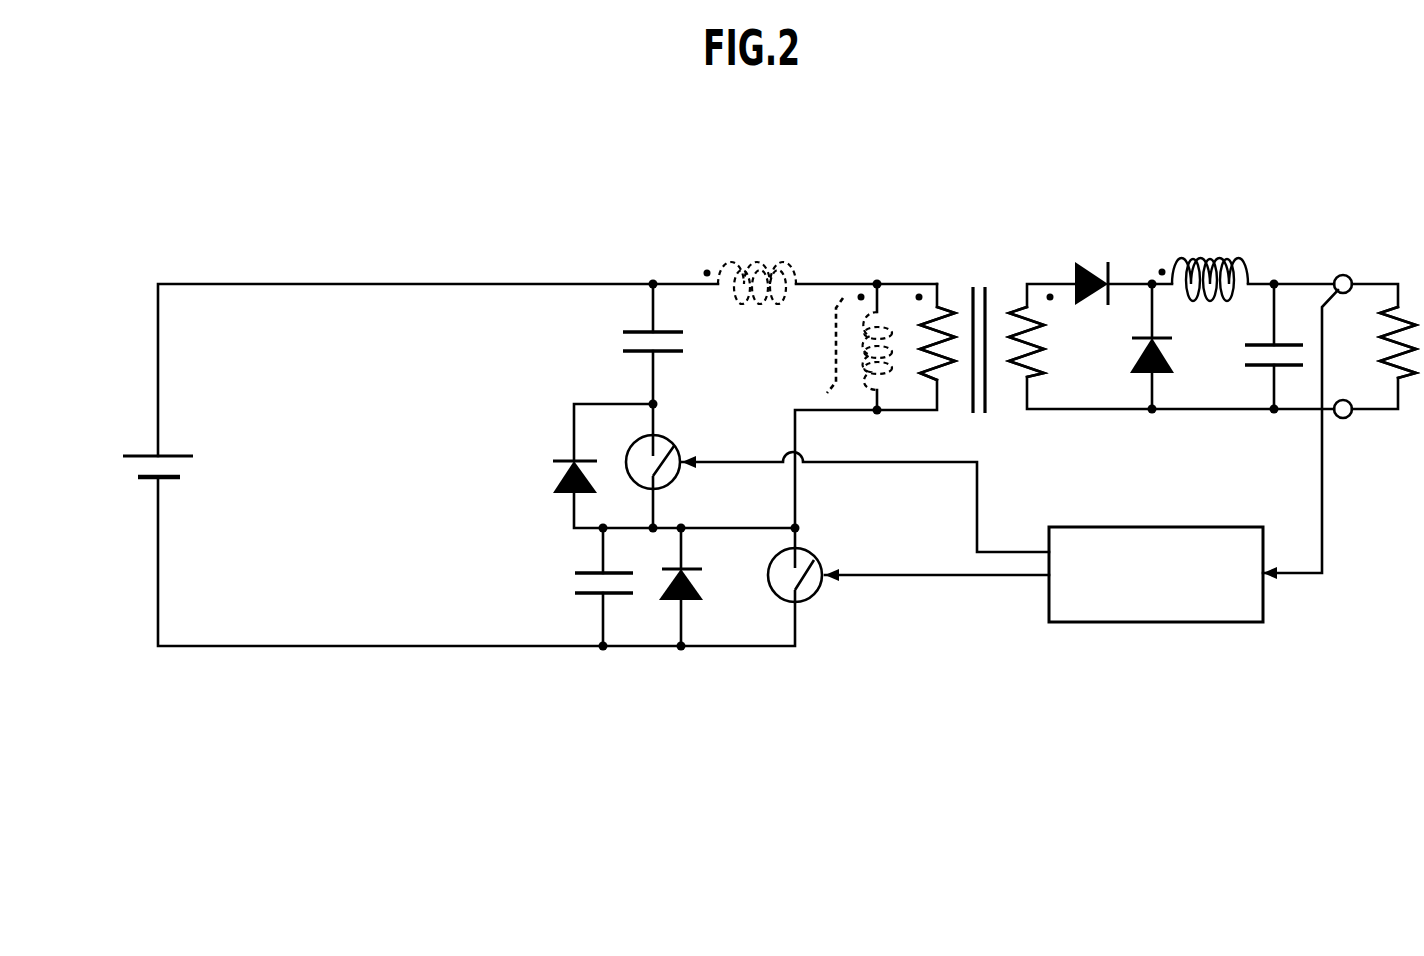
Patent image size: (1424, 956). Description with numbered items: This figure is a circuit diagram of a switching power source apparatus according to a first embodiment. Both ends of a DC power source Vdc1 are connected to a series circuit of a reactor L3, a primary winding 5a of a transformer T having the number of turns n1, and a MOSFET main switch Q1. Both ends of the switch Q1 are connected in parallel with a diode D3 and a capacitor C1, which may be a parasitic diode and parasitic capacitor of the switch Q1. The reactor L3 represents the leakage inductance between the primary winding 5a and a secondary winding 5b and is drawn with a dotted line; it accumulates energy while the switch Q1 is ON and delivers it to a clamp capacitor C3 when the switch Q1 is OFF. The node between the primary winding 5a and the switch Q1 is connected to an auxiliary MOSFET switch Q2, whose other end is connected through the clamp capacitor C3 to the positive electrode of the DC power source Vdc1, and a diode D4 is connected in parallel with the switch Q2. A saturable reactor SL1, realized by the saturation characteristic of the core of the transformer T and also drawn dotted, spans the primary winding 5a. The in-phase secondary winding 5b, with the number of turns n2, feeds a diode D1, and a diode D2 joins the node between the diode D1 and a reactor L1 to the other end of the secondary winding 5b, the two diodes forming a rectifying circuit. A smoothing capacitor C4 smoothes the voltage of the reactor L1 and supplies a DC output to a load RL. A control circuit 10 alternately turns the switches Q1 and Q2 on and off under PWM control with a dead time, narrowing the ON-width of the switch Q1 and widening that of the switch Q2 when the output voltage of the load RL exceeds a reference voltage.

The DC power source Vdc1 is at (137, 445).
The clamp capacitor C3 is at (635, 345).
The reactor L3 is at (757, 262).
The saturable reactor SL1 is at (835, 345).
The primary winding 5a is at (910, 317).
The number of turns of primary winding n1 is at (935, 313).
The transformer T is at (978, 331).
The number of turns of secondary winding n2 is at (1028, 310).
The diode D1 is at (1090, 264).
The reactor L1 is at (1210, 259).
The diode D2 is at (1135, 355).
The smoothing capacitor C4 is at (1254, 355).
The load RL is at (1381, 342).
The secondary winding 5b is at (1040, 379).
The diode D4 is at (552, 478).
The switch (auxiliary switch) Q2 is at (664, 448).
The capacitor C1 is at (585, 585).
The diode D3 is at (699, 596).
The switch (main switch) Q1 is at (799, 596).
The control circuit 10 is at (1150, 622).